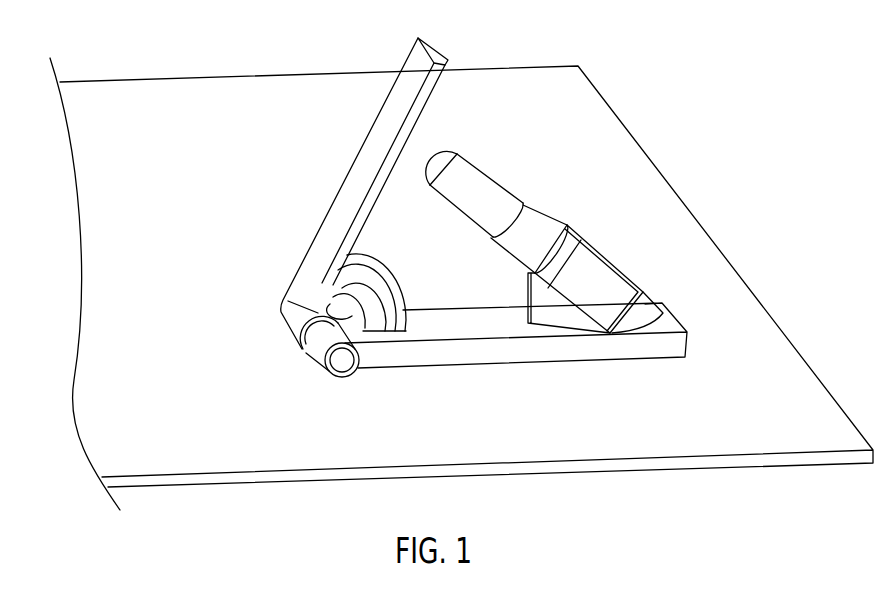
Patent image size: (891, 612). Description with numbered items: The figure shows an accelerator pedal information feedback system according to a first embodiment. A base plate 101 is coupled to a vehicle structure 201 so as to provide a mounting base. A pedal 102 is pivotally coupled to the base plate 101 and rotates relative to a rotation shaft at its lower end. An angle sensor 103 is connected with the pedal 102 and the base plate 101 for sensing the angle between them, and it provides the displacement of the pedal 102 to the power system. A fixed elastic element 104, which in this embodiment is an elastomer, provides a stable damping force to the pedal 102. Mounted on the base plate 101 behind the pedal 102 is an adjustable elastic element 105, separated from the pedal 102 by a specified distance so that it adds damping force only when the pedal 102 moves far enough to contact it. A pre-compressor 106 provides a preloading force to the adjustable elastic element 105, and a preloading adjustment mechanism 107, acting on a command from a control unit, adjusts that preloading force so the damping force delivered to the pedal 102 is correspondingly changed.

The base plate 101 is at (444, 369).
The pedal 102 is at (321, 221).
The angle sensor 103 is at (331, 384).
The fixed elastic element 104 is at (391, 287).
The adjustable elastic element 105 is at (491, 177).
The pre-compressor 106 is at (542, 214).
The preloading adjustment mechanism 107 is at (603, 248).
The vehicle structure 201 is at (762, 337).